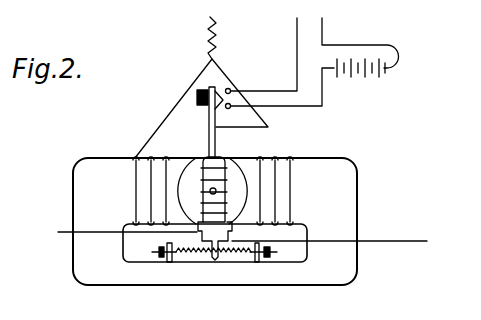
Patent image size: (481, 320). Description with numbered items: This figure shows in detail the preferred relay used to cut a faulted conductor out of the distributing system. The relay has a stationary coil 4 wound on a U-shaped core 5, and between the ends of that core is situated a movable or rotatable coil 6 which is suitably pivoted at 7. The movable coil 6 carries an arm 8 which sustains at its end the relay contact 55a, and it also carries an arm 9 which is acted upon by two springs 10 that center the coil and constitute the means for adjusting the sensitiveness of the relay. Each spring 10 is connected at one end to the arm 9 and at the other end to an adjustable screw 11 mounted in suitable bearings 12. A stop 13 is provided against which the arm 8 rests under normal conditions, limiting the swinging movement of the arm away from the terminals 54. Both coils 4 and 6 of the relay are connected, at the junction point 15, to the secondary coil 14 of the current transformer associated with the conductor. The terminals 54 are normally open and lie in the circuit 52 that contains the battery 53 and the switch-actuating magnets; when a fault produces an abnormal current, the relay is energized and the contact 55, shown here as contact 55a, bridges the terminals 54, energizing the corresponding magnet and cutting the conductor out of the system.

The stationary coil 4 is at (152, 192).
The U-shaped core 5 is at (172, 167).
The movable coil 6 is at (226, 199).
The pivot 7 is at (216, 190).
The arm 8 is at (216, 146).
The arm 9 is at (215, 258).
The spring 10 is at (197, 254).
The adjustable screw 11 is at (157, 254).
The bearing 12 is at (168, 262).
The stop 13 is at (197, 99).
The secondary coil 14 is at (216, 34).
The junction point 15 is at (212, 58).
The circuit 52 is at (297, 41).
The battery 53 is at (363, 72).
The terminals 54 is at (43, 319).
The relay contact 55 is at (35, 319).
The relay contact 55a is at (215, 87).